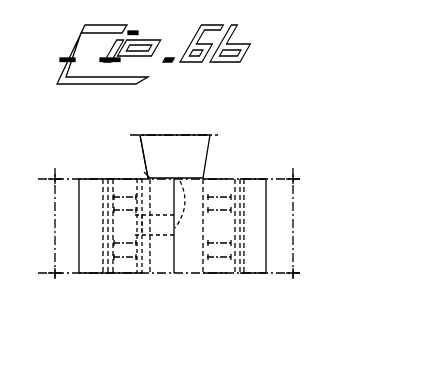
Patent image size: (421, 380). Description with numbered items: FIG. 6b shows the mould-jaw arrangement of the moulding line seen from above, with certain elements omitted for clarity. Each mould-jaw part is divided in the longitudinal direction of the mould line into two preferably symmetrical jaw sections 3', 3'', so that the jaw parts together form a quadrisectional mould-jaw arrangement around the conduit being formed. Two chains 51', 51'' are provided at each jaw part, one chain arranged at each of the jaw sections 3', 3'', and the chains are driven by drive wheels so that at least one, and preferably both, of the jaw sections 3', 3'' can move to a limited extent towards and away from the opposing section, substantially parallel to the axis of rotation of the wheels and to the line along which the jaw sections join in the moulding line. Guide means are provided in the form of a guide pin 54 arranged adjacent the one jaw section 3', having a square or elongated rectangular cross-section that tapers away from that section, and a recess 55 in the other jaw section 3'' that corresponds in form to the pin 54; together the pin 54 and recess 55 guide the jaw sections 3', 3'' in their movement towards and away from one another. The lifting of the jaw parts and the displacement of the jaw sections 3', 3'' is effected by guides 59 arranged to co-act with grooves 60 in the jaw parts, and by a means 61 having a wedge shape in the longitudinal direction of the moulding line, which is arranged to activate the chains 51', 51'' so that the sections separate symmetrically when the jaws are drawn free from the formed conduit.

The guide 59 is at (58, 251).
The groove 60 is at (256, 195).
The wedge-shaped means 61 is at (163, 143).
The recess 55 is at (143, 168).
The guide pin 54 is at (172, 180).
The chain 51' is at (118, 248).
The chain 51'' is at (251, 248).
The jaw section 3' is at (158, 248).
The jaw section 3'' is at (206, 248).